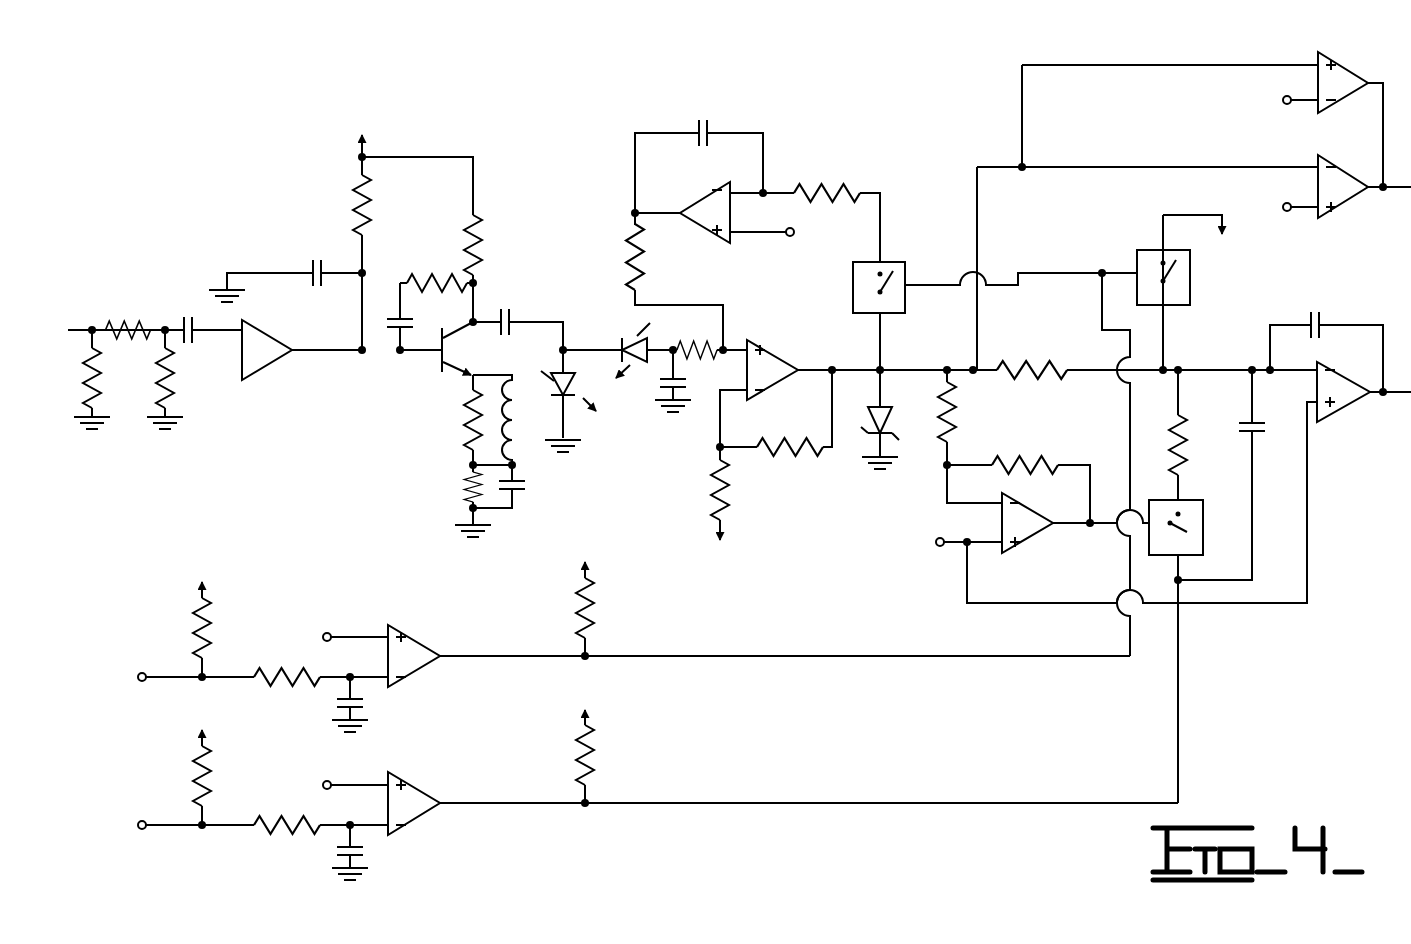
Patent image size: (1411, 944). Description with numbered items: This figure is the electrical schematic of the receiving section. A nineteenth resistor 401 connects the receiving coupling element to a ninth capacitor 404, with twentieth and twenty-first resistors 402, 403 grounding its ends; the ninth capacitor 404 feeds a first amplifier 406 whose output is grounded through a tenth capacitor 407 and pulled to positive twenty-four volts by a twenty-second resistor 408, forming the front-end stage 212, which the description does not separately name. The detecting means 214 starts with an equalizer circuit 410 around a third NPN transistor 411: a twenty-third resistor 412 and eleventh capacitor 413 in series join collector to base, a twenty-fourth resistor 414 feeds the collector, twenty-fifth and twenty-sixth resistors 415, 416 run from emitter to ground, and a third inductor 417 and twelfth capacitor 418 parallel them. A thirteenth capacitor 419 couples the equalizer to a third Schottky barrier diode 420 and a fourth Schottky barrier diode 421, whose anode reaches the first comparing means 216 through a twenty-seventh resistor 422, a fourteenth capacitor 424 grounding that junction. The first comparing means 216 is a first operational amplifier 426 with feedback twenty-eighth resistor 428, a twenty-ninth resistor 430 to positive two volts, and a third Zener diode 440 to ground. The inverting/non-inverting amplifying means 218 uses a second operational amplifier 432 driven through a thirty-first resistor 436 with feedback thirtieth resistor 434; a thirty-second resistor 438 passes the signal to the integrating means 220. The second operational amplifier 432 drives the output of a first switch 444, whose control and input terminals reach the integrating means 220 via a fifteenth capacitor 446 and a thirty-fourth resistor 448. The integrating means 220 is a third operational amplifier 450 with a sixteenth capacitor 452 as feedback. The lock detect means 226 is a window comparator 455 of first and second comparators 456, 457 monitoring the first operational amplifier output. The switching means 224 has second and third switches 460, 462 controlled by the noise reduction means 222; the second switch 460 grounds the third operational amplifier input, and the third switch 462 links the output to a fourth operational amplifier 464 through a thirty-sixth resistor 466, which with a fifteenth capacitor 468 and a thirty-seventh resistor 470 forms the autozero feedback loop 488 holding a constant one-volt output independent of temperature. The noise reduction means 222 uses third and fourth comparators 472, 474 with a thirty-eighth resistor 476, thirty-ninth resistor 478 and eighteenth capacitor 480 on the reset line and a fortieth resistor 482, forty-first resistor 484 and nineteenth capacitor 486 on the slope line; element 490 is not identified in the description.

The input amplifier section 212 is at (233, 210).
The detecting means 214 is at (525, 285).
The first comparing means 216 is at (760, 548).
The inverting/non-inverting amplifying means 218 is at (910, 568).
The integrating means 220 is at (1318, 470).
The noise reduction means 222 is at (375, 555).
The switching means 224 is at (1115, 232).
The lock detect means 226 is at (990, 96).
The nineteenth resistor 401 is at (162, 328).
The twentieth resistor 402 is at (98, 396).
The twenty-first resistor 403 is at (170, 396).
The ninth capacitor 404 is at (208, 332).
The first amplifier 406 is at (265, 333).
The capacitor 407 is at (334, 268).
The twenty-second resistor 408 is at (372, 218).
The equalizer circuit 410 is at (366, 434).
The third NPN transistor 411 is at (440, 360).
The twenty-third resistor 412 is at (436, 272).
The eleventh capacitor 413 is at (396, 312).
The twenty-fourth resistor 414 is at (478, 220).
The twenty-fifth resistor 415 is at (468, 405).
The twenty-sixth resistor 416 is at (462, 505).
The third inductor 417 is at (524, 392).
The twelfth capacitor 418 is at (520, 492).
The thirteenth capacitor 419 is at (535, 322).
The third Schottky barrier diode 420 is at (572, 420).
The fourth Schottky barrier diode 421 is at (612, 352).
The twenty-seventh resistor 422 is at (712, 345).
The fourteenth capacitor 424 is at (662, 385).
The first operational amplifier 426 is at (770, 350).
The twenty-eighth resistor 428 is at (778, 458).
The twenty-ninth resistor 430 is at (728, 504).
The second operational amplifier 432 is at (1018, 548).
The thirtieth resistor 434 is at (1022, 460).
The thirty-first resistor 436 is at (955, 430).
The thirty-second resistor 438 is at (998, 362).
The third Zener diode 440 is at (905, 397).
The first switch 444 is at (1205, 528).
The fifteenth capacitor 446 is at (1258, 445).
The thirty-fourth resistor 448 is at (1185, 440).
The third operational amplifier 450 is at (1348, 405).
The sixteenth capacitor 452 is at (1300, 322).
The window comparator 455 is at (1258, 46).
The first comparator 456 is at (1348, 168).
The second comparator 457 is at (1348, 62).
The second switch 460 is at (1180, 308).
The third switch 462 is at (890, 262).
The fourth operational amplifier 464 is at (707, 235).
The thirty-sixth resistor 466 is at (838, 185).
The fifteenth capacitor 468 is at (645, 142).
The thirty-seventh resistor 470 is at (642, 302).
The third comparator 472 is at (420, 640).
The fourth comparator 474 is at (432, 820).
The thirty-eighth resistor 476 is at (292, 668).
The thirty-ninth resistor 478 is at (208, 613).
The eighteenth capacitor 480 is at (362, 723).
The fortieth resistor 482 is at (290, 835).
The forty-first resistor 484 is at (210, 762).
The nineteenth capacitor 486 is at (365, 870).
The autozero feedback loop 488 is at (598, 620).
The resistor 490 is at (598, 770).